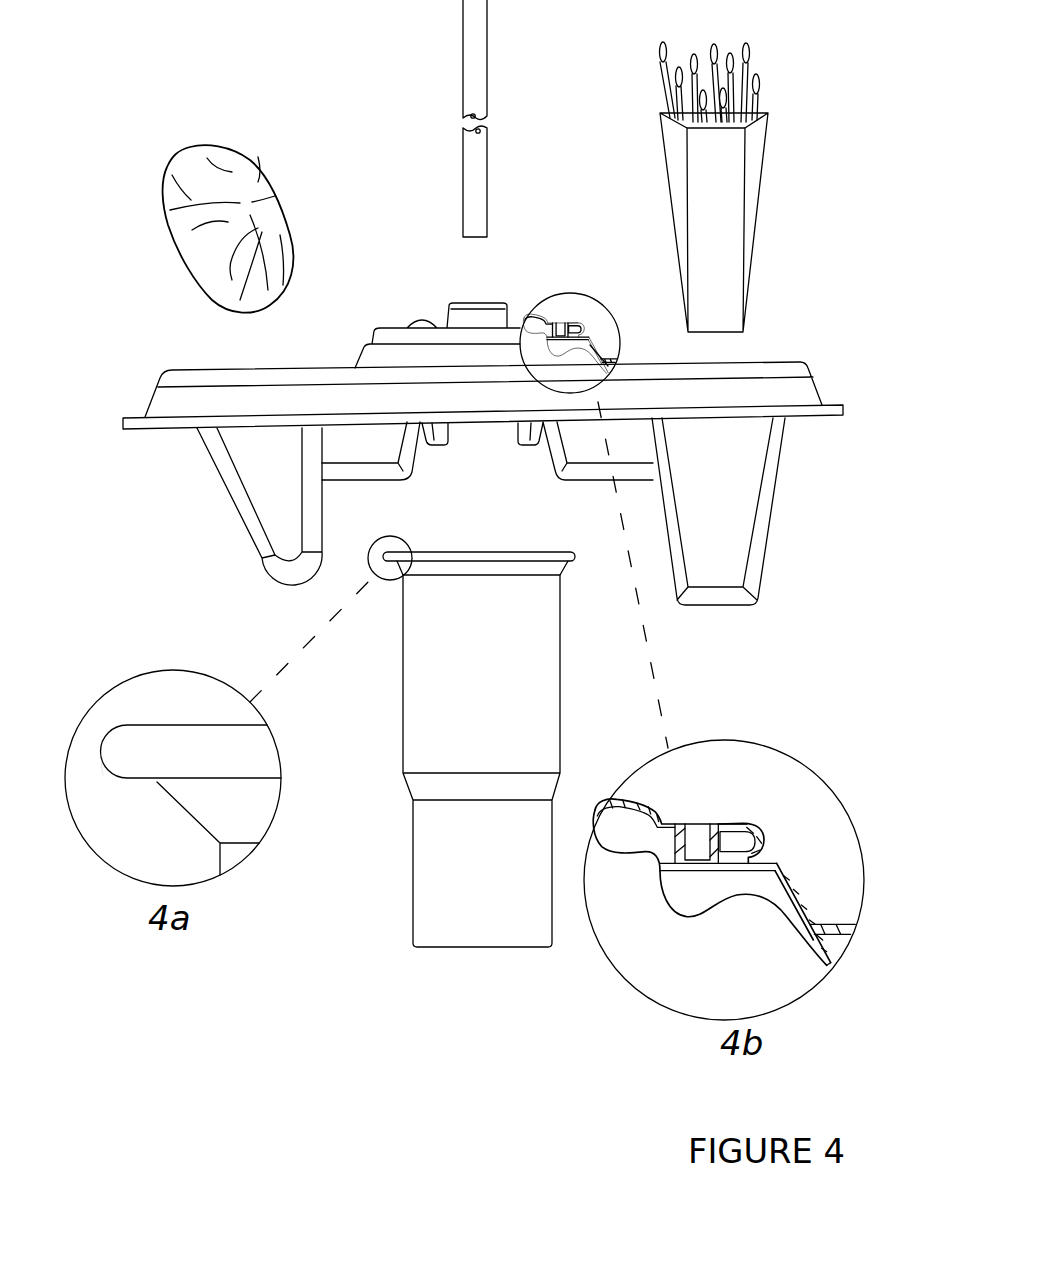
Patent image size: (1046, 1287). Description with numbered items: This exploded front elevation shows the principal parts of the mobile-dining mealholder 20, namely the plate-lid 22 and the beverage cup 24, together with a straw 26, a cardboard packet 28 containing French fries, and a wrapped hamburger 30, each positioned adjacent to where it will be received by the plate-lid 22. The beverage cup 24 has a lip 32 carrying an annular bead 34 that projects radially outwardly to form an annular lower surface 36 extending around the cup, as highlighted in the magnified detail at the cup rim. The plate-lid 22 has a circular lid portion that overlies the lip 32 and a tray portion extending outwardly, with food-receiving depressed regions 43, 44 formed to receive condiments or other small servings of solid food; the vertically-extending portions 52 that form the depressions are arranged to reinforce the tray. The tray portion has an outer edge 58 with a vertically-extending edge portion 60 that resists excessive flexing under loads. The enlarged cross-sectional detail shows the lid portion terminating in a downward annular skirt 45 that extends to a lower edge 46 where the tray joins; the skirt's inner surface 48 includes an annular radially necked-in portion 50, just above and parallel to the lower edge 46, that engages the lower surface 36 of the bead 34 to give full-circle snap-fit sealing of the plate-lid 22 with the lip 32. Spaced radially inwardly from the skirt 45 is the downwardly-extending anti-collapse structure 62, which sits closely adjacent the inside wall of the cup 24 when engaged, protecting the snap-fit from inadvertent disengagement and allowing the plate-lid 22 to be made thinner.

The mobile-dining mealholder 20 is at (500, 459).
The plate-lid 22 is at (511, 449).
The beverage cup 24 is at (318, 728).
The straw 26 is at (490, 72).
The cardboard packet 28 is at (760, 93).
The wrapped hamburger 30 is at (278, 195).
The lip 32 is at (467, 551).
The annular bead 34 is at (573, 560).
The annular lower surface 36 is at (157, 783).
The food-receiving depressed region 43 is at (363, 453).
The food-receiving depressed region 44 is at (628, 445).
The annular skirt 45 is at (780, 867).
The lower edge 46 is at (833, 963).
The inner surface 48 is at (780, 890).
The necked-in portion 50 is at (748, 868).
The vertically-extending portions 52 is at (223, 488).
The outer edge 58 is at (847, 408).
The vertically-extending edge portion 60 is at (817, 377).
The anti-collapse structure 62 is at (732, 837).